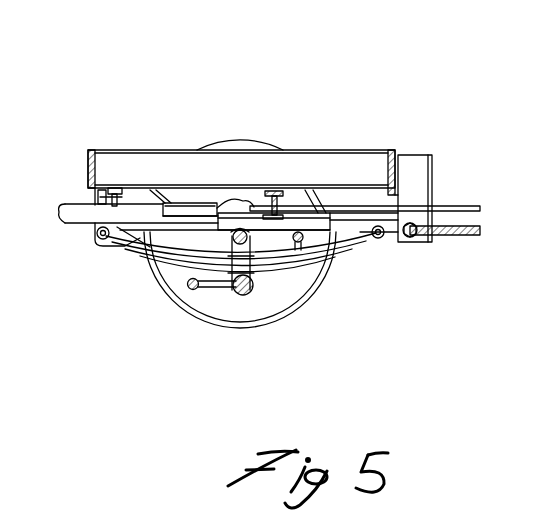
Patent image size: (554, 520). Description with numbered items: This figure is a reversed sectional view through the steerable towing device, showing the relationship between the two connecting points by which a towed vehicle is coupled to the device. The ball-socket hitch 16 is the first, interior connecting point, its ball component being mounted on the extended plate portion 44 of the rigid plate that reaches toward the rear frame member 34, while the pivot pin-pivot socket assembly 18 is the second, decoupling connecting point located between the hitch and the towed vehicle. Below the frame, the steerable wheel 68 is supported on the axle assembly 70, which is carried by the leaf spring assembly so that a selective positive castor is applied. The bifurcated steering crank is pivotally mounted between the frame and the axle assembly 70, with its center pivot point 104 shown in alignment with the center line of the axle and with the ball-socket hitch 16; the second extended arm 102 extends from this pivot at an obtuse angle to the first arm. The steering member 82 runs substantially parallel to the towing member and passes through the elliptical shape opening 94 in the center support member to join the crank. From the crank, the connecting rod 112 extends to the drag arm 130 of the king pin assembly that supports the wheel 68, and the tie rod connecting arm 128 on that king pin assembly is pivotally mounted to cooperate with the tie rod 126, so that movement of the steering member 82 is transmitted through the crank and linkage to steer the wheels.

The ball-socket hitch 16 is at (242, 200).
The pivot pin-pivot socket assembly 18 is at (113, 200).
The rear frame member 34 is at (90, 175).
The extended plate portion 44 is at (145, 282).
The steerable wheel 68 is at (258, 141).
The axle assembly 70 is at (213, 300).
The steering member 82 is at (352, 236).
The elliptical shape opening 94 is at (283, 197).
The second extended arm 102 is at (163, 230).
The center pivot point 104 is at (190, 216).
The connecting rod 112 is at (310, 262).
The tie rod 126 is at (213, 216).
The tie rod connecting arm 128 is at (240, 228).
The drag arm 130 is at (252, 297).